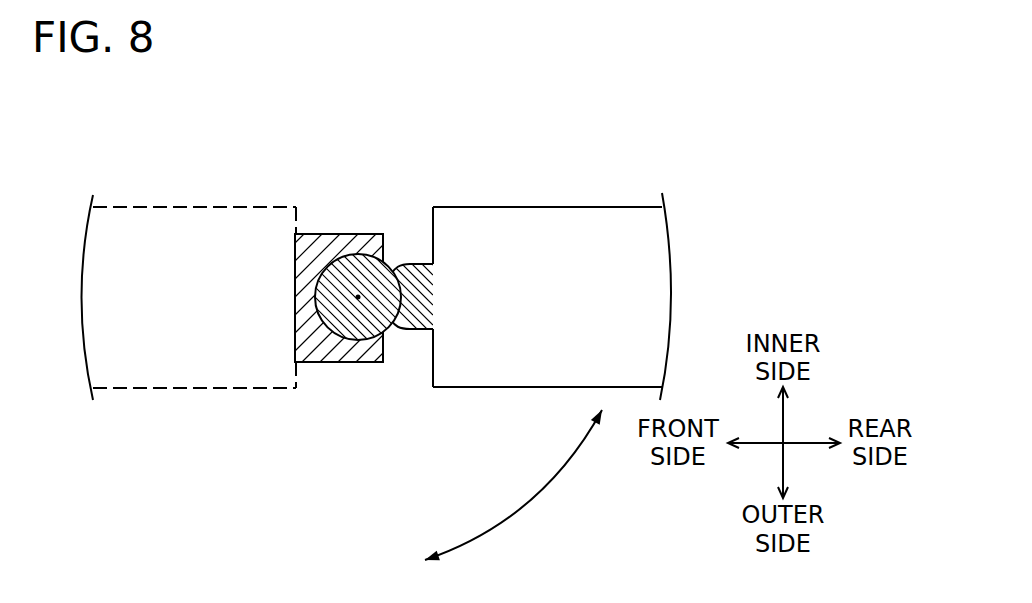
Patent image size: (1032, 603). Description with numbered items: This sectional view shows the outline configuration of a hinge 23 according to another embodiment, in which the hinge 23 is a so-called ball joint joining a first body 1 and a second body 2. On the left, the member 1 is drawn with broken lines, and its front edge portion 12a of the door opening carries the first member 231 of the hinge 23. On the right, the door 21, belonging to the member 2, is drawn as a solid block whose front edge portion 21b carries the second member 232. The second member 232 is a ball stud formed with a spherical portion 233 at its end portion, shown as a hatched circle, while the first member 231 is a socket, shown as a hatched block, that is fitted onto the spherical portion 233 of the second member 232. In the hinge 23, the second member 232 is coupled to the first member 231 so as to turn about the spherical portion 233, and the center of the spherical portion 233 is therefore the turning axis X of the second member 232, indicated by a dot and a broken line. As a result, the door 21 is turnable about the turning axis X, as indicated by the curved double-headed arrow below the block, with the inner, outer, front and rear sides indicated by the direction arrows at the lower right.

The first member (electronic device housing) 1 is at (142, 207).
The front edge portion of the door opening 12a is at (258, 220).
The second member (sliding unit) 2 is at (713, 155).
The door 21 is at (612, 207).
The front edge portion of the door 21b is at (468, 228).
The hinge 23 is at (346, 312).
The first member 231 is at (328, 362).
The second member 232 is at (407, 330).
The spherical portion 233 is at (360, 330).
The turning axis X is at (358, 297).